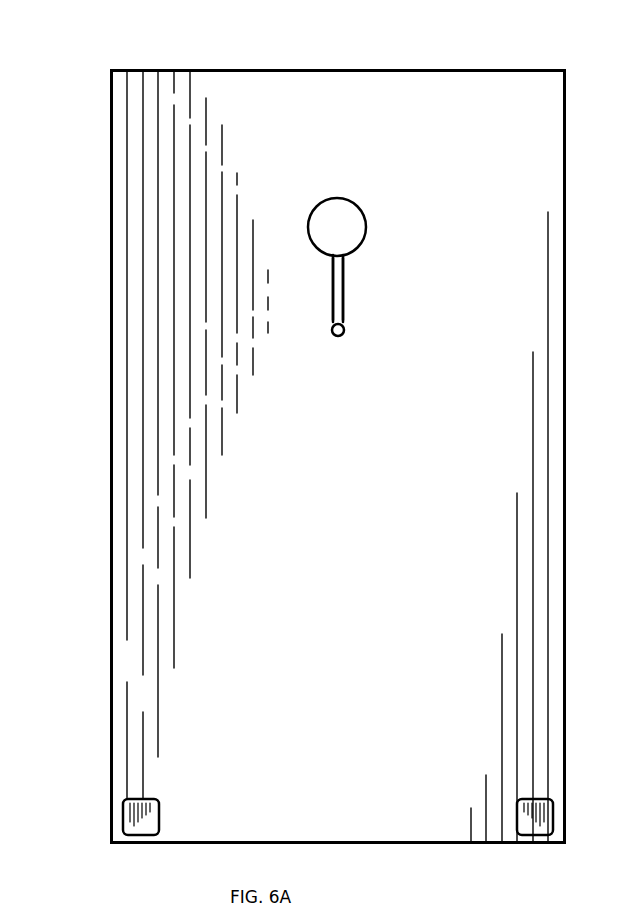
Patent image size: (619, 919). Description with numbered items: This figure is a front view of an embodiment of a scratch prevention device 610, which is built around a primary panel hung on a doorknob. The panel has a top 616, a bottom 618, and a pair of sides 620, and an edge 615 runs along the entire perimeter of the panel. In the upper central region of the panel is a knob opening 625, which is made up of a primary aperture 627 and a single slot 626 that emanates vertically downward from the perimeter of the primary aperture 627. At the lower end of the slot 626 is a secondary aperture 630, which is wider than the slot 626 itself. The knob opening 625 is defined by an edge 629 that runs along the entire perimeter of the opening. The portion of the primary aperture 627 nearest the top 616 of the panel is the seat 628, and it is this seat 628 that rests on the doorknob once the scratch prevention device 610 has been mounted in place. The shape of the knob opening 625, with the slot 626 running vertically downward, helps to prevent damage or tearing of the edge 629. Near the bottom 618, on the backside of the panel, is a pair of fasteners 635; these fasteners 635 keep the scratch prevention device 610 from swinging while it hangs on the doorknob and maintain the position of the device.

The scratch prevention device 610 is at (243, 38).
The edge 615 is at (152, 70).
The top 616 is at (400, 70).
The bottom 618 is at (460, 844).
The sides 620 is at (111, 568).
The knob opening 625 is at (387, 253).
The slot 626 is at (344, 275).
The primary aperture 627 is at (335, 215).
The seat 628 is at (345, 200).
The edge 629 is at (367, 227).
The secondary aperture 630 is at (344, 333).
The fasteners 635 is at (545, 918).